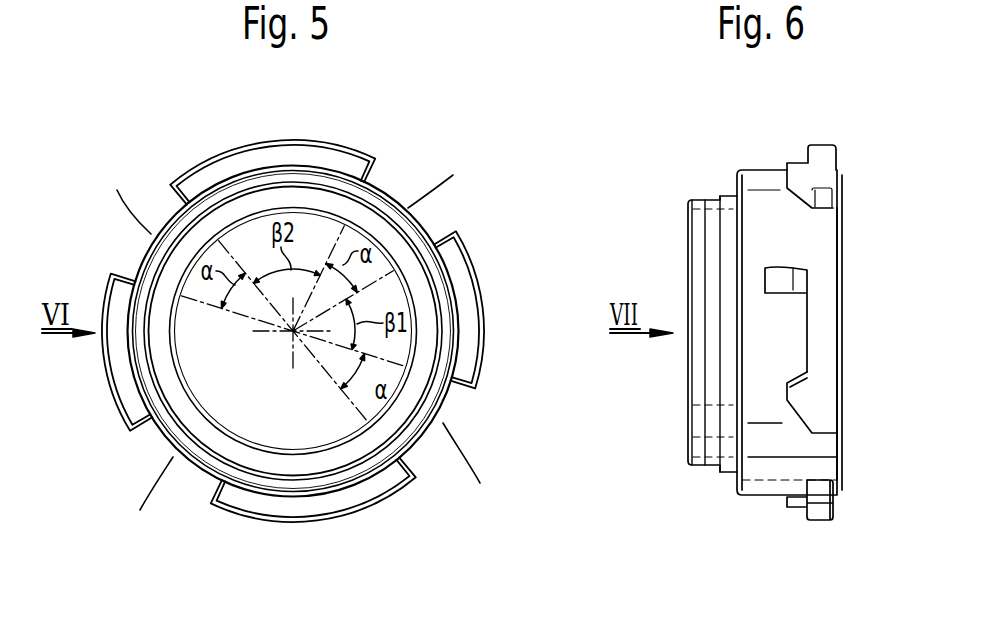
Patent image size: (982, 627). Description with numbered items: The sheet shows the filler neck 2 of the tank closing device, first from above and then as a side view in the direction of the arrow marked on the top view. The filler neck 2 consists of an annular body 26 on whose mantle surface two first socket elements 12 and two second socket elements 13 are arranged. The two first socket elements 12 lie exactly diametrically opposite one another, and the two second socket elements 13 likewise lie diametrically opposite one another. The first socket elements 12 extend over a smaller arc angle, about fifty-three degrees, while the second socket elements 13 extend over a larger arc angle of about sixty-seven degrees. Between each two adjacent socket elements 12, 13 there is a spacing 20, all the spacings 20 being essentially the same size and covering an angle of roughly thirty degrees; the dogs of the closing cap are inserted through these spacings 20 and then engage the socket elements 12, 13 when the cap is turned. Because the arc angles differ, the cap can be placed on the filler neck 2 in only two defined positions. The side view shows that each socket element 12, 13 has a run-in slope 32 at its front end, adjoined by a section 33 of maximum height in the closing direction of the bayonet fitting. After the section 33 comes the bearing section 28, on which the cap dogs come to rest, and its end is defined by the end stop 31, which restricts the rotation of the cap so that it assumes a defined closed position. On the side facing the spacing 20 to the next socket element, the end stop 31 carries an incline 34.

In FIG. 5, the filler neck 2 is at (362, 144).
In FIG. 6, the filler neck 2 is at (716, 484).
In FIG. 5, the first socket element 12 is at (464, 279).
In FIG. 6, the first socket element 12 is at (817, 362).
In FIG. 5, the second socket element 13 is at (243, 163).
In FIG. 6, the second socket element 13 is at (813, 152).
In FIG. 5, the spacing 20 is at (296, 342).
In FIG. 6, the spacing 20 is at (818, 233).
In FIG. 5, the annular body 26 is at (360, 447).
In FIG. 6, the annular body 26 is at (752, 200).
In FIG. 6, the bearing section 28 is at (805, 352).
In FIG. 6, the end stop 31 is at (765, 276).
In FIG. 6, the run-in slope 32 is at (800, 183).
In FIG. 6, the section of maximum height 33 is at (803, 186).
In FIG. 6, the incline 34 is at (795, 270).